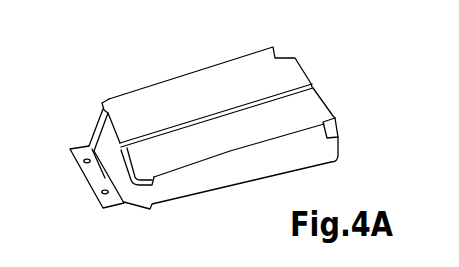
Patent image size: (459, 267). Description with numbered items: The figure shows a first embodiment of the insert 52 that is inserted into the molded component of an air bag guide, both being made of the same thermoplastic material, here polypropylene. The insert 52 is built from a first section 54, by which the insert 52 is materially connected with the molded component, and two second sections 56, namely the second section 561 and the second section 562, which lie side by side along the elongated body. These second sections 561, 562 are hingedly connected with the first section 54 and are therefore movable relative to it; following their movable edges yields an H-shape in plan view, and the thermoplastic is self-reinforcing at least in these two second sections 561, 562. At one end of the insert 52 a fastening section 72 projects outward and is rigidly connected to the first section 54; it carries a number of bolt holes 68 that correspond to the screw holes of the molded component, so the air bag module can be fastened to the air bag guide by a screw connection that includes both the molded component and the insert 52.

The insert 52 is at (128, 66).
The first section 54 is at (217, 177).
The second sections 56 is at (220, 116).
The second section 561 is at (165, 117).
The second section 562 is at (239, 147).
The bolt holes 68 is at (87, 164).
The fastening section 72 is at (97, 177).